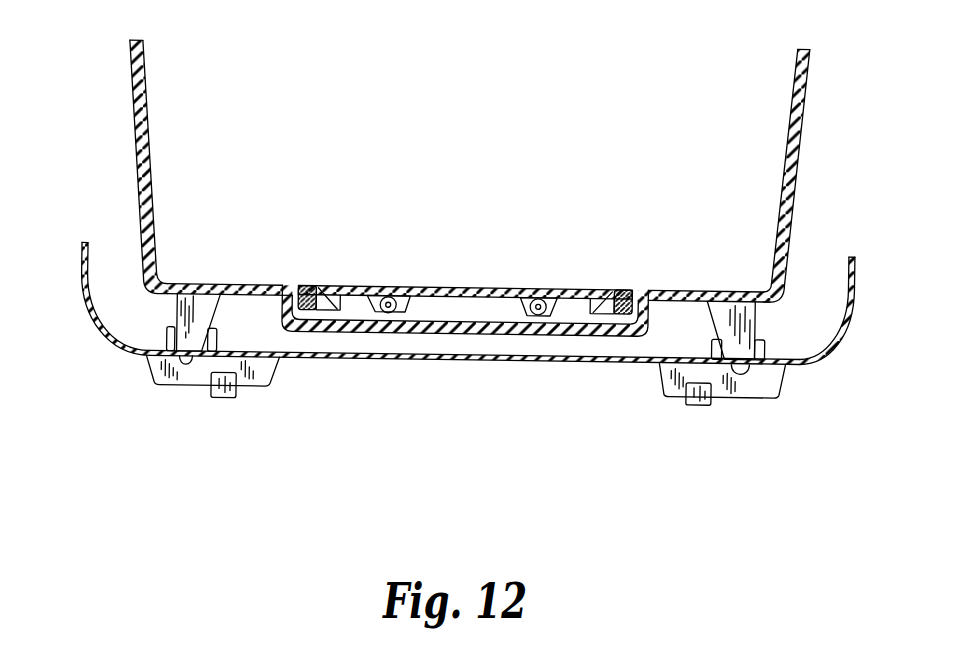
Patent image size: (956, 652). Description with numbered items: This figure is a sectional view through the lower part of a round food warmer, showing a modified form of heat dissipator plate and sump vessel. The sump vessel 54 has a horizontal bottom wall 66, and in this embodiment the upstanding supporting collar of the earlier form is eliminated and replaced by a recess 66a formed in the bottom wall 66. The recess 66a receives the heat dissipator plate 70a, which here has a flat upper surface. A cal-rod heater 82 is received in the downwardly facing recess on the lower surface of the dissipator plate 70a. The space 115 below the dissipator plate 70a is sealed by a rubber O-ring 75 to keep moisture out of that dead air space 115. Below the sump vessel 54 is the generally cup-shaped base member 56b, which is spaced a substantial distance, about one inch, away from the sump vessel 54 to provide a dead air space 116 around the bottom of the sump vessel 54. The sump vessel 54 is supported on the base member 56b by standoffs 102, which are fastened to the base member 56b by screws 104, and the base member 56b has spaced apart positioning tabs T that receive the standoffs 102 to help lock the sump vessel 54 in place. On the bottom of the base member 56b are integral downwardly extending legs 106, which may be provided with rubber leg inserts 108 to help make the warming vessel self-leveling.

The sump vessel 54 is at (126, 115).
The base member 56b is at (83, 268).
The bottom wall 66 is at (205, 287).
The recess 66a is at (568, 325).
The heat dissipator plate 70a is at (498, 278).
The rubber O-ring 75 is at (290, 290).
The cal-rod heater 82 is at (388, 300).
The standoffs 102 is at (170, 308).
The screws 104 is at (188, 380).
The legs 106 is at (150, 383).
The rubber leg inserts 108 is at (238, 388).
The space 115 is at (471, 310).
The dead air space 116 is at (477, 350).
The positioning tabs T is at (167, 342).